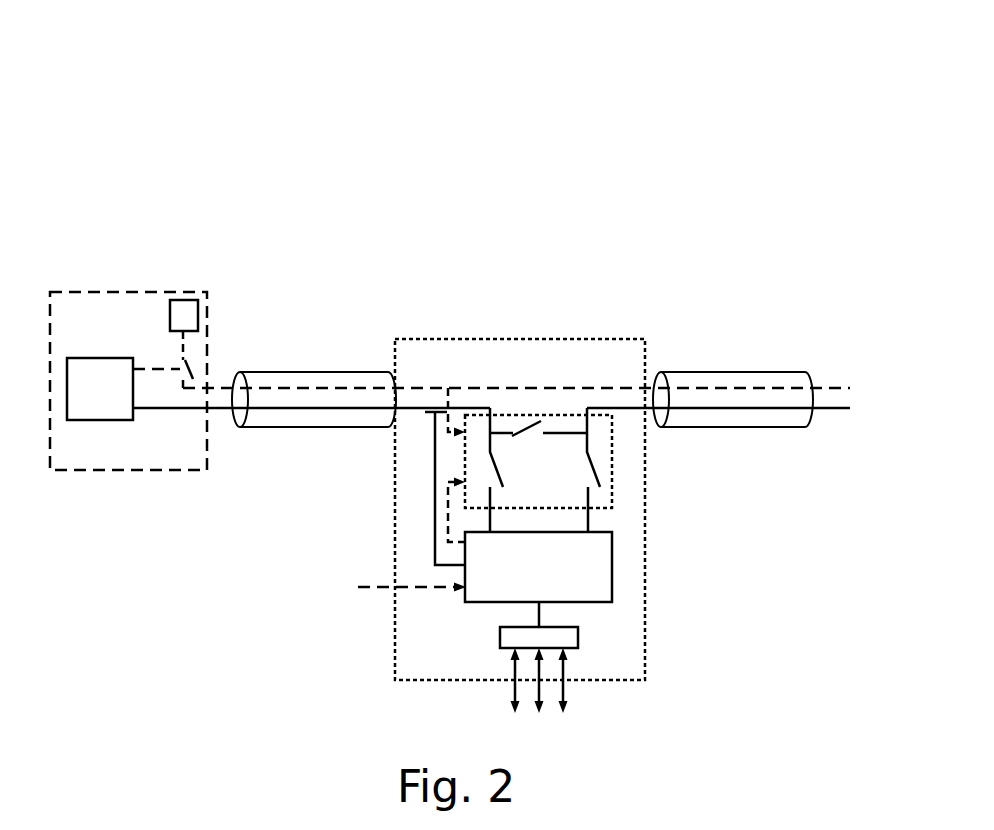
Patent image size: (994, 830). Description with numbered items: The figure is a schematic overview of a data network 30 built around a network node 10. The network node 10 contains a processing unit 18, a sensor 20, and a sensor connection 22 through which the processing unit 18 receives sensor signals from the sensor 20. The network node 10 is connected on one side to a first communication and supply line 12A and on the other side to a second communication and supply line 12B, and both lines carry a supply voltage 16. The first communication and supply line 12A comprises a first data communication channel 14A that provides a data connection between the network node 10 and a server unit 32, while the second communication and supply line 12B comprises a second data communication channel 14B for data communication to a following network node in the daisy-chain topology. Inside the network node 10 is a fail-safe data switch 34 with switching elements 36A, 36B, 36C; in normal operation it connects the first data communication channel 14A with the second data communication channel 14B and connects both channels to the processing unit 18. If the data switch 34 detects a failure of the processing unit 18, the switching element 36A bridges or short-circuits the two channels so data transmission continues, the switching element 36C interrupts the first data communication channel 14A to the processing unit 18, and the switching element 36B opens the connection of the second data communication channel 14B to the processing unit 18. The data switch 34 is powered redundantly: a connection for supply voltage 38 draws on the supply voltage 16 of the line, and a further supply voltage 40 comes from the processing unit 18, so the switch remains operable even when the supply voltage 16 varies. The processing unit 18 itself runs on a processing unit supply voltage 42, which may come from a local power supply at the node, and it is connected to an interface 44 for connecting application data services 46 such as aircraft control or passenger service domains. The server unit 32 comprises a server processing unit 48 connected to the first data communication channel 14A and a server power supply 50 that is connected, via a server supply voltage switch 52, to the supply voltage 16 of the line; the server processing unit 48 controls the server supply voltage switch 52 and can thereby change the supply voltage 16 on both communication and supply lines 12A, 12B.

The data network 30 is at (505, 92).
The network node 10 is at (507, 339).
The first communication and supply line 12A is at (285, 372).
The second communication and supply line 12B is at (767, 372).
The first data communication channel 14A is at (305, 427).
The second data communication channel 14B is at (767, 427).
The supply voltage 16 is at (355, 386).
The processing unit 18 is at (612, 560).
The sensor 20 is at (415, 418).
The sensor connection 22 is at (435, 555).
The server unit 32 is at (113, 292).
The data switch 34 is at (614, 497).
The switching element 36A is at (530, 429).
The switching element 36B is at (597, 466).
The switching element 36C is at (499, 470).
The connection for supply voltage 38 is at (448, 386).
The further supply voltage 40 is at (445, 492).
The processing unit supply voltage 42 is at (357, 590).
The interface 44 is at (578, 637).
The application data services 46 is at (565, 695).
The server processing unit 48 is at (94, 420).
The server power supply 50 is at (183, 300).
The server supply voltage switch 52 is at (195, 358).